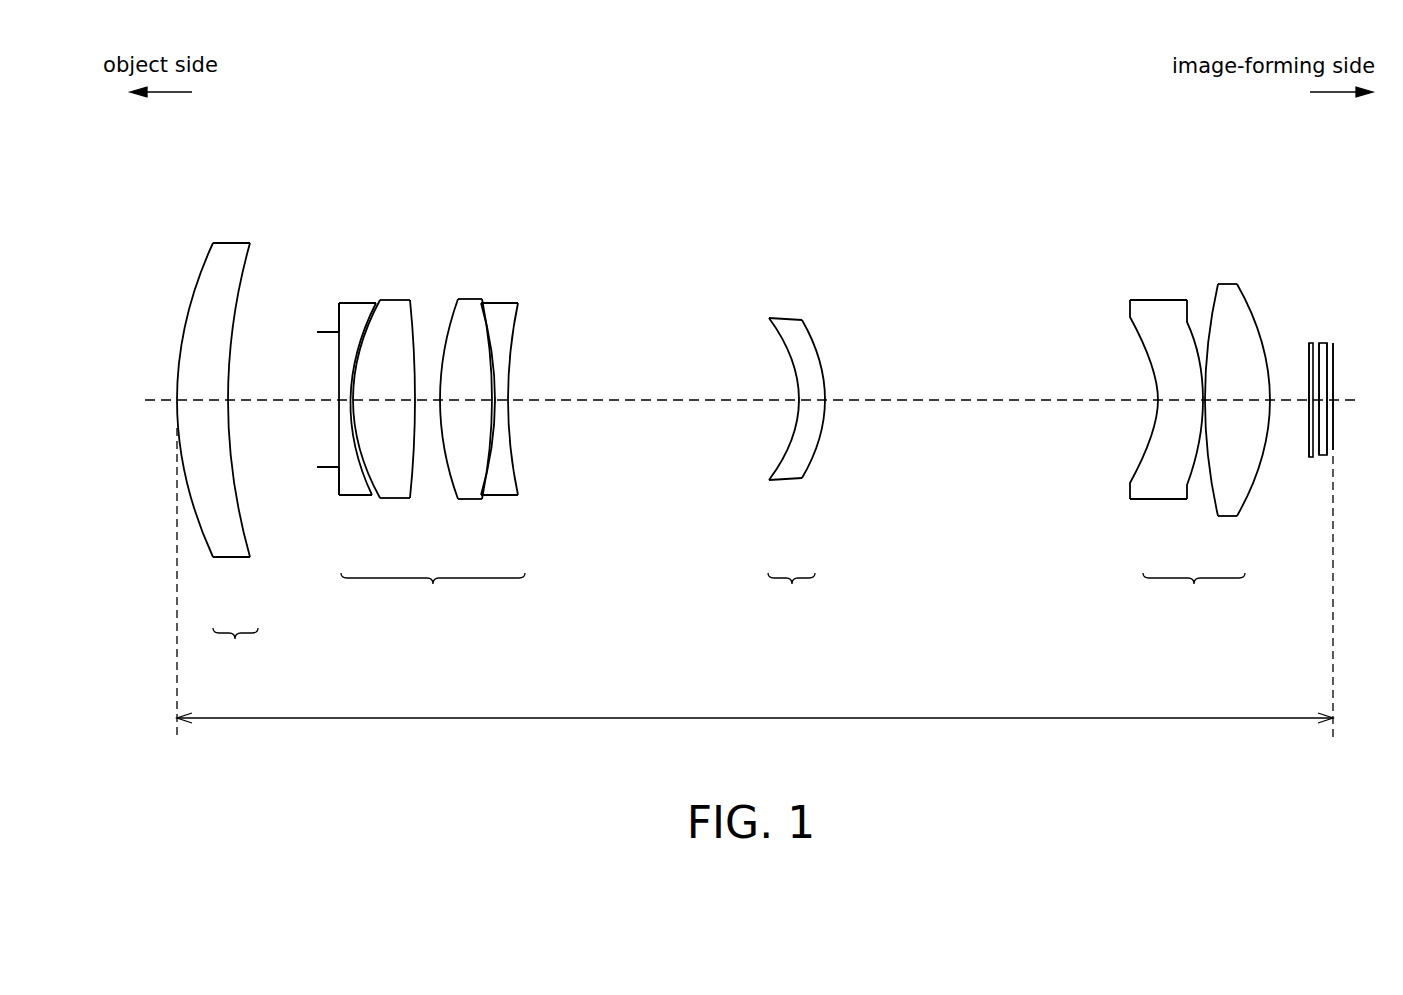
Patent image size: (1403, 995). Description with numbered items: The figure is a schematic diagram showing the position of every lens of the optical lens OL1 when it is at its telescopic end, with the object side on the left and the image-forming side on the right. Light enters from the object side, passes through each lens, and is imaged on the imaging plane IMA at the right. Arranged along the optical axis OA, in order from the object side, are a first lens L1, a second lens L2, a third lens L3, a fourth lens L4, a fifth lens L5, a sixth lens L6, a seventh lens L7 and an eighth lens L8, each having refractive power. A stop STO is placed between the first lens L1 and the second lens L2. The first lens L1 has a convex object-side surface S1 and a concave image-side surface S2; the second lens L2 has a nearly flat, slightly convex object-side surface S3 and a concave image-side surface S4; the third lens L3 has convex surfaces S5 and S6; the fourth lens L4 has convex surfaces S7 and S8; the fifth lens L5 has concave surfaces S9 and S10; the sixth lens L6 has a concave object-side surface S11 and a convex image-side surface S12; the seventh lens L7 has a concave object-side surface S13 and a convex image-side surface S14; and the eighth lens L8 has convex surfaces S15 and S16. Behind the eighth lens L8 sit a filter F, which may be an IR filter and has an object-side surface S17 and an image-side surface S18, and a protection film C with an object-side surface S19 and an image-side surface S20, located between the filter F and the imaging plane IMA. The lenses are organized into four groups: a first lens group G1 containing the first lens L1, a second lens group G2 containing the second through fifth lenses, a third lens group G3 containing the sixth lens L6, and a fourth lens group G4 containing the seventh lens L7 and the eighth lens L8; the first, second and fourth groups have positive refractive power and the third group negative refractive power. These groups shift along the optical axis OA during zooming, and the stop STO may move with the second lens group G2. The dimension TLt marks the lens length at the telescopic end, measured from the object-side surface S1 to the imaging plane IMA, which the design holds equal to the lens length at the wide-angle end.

The optical lens OL1 is at (178, 156).
The optical axis OA is at (771, 400).
The first lens group G1 is at (215, 457).
The second lens group G2 is at (437, 412).
The third lens group G3 is at (803, 466).
The fourth lens group G4 is at (1175, 414).
The first lens L1 is at (215, 435).
The second lens L2 is at (327, 390).
The third lens L3 is at (389, 403).
The fourth lens L4 is at (462, 395).
The fifth lens L5 is at (540, 412).
The sixth lens L6 is at (803, 445).
The seventh lens L7 is at (1140, 410).
The eighth lens L8 is at (1227, 392).
The stop STO is at (338, 315).
The object-side surface of the first lens S1 is at (185, 317).
The image-side surface of the first lens S2 is at (238, 313).
The object-side surface of the second lens S3 is at (339, 375).
The image-side surface of the second lens S4 is at (372, 306).
The object-side surface of the third lens S5 is at (372, 331).
The image-side surface of the third lens S6 is at (422, 329).
The object-side surface of the fourth lens S7 is at (451, 331).
The image-side surface of the fourth lens S8 is at (486, 351).
The object-side surface of the fifth lens S9 is at (492, 362).
The image-side surface of the fifth lens S10 is at (514, 338).
The object-side surface of the sixth lens S11 is at (786, 351).
The image-side surface of the sixth lens S12 is at (815, 350).
The object-side surface of the seventh lens S13 is at (1142, 350).
The image-side surface of the seventh lens S14 is at (1192, 326).
The object-side surface of the eighth lens S15 is at (1212, 316).
The image-side surface of the eighth lens S16 is at (1257, 308).
The object-side surface of the filter S17 is at (1309, 357).
The image-side surface of the filter S18 is at (1325, 350).
The object-side surface of the protection film S19 is at (1328, 360).
The image-side surface of the protection film S20 is at (1333, 373).
The filter F is at (1309, 427).
The protection film C is at (1322, 455).
The imaging plane IMA is at (1335, 432).
The lens length at the telescopic end TLt is at (755, 591).